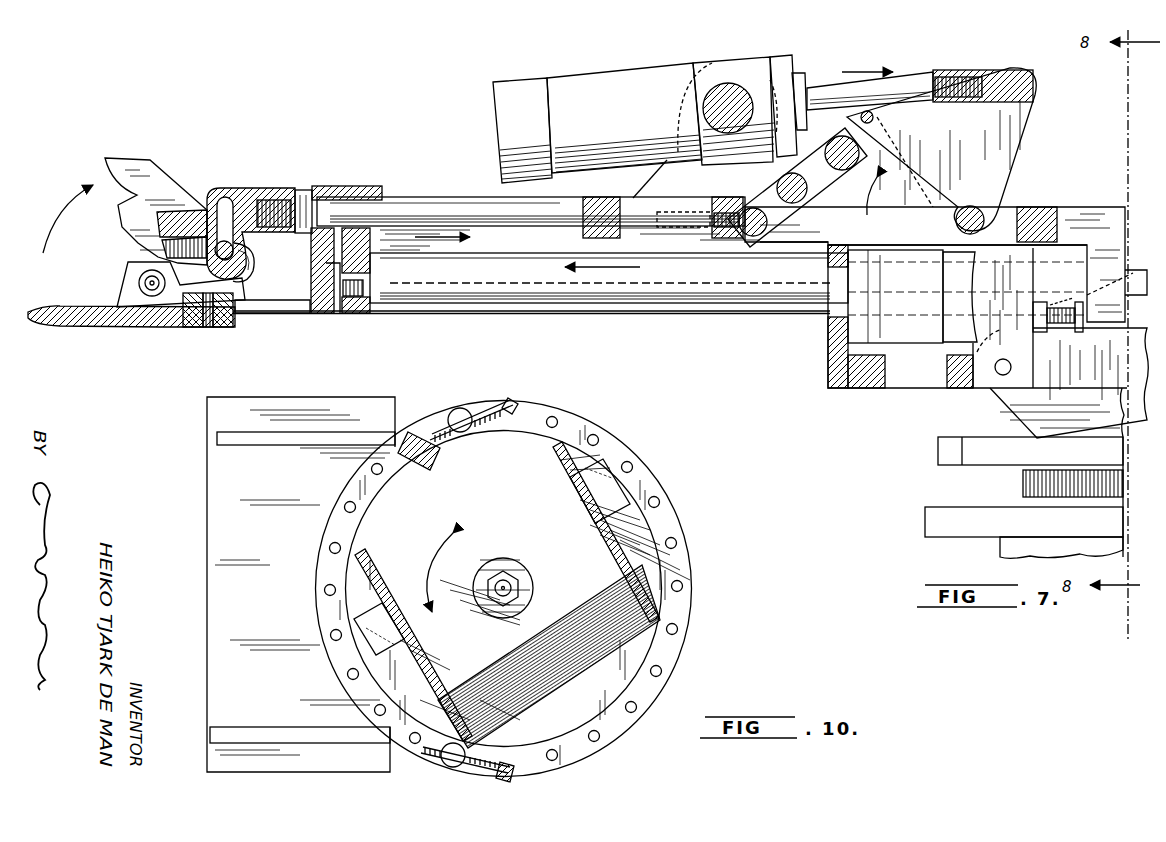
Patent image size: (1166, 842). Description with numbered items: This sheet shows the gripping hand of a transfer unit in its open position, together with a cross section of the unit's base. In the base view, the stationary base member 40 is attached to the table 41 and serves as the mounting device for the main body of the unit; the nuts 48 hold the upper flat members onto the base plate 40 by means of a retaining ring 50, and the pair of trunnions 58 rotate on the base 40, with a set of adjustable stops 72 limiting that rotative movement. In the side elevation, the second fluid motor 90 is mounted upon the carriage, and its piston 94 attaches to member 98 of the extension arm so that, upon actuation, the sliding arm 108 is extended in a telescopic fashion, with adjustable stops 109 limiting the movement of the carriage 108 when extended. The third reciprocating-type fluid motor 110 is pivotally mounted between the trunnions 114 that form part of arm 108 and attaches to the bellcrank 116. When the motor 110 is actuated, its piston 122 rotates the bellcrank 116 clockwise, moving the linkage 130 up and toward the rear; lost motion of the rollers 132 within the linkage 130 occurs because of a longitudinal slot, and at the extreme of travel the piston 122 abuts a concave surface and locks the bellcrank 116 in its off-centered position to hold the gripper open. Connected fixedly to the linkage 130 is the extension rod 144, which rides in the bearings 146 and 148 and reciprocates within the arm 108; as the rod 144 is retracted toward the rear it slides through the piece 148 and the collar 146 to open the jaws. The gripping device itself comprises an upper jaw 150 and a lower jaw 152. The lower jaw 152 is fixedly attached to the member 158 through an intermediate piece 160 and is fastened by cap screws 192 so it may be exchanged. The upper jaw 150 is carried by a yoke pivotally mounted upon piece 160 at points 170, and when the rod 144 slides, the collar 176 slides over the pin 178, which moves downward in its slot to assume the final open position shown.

In FIG. 10, the stationary base member 40 is at (683, 577).
In FIG. 10, the table 41 is at (388, 405).
In FIG. 10, the nuts 48 is at (512, 584).
In FIG. 10, the retaining ring 50 is at (530, 585).
In FIG. 10, the trunnions 58 is at (557, 462).
In FIG. 10, the adjustable stops 72 is at (513, 398).
In FIG. 7, the second fluid motor 90 is at (905, 345).
In FIG. 7, the piston 94 is at (754, 306).
In FIG. 7, the member of the extension arm 98 is at (352, 308).
In FIG. 7, the sliding arm 108 is at (1088, 207).
In FIG. 7, the adjustable stops 109 is at (1076, 332).
In FIG. 7, the third reciprocating-type fluid motor 110 is at (645, 90).
In FIG. 7, the trunnions 114 is at (660, 178).
In FIG. 7, the bellcrank 116 is at (1008, 140).
In FIG. 7, the motor piston 122 is at (918, 74).
In FIG. 7, the linkage 130 is at (826, 172).
In FIG. 7, the rollers 132 is at (836, 148).
In FIG. 7, the extension rod 144 is at (420, 204).
In FIG. 7, the bearing (collar) 146 is at (592, 236).
In FIG. 7, the bearing (piece) 148 is at (358, 192).
In FIG. 7, the upper jaw 150 is at (125, 165).
In FIG. 7, the lower jaw 152 is at (68, 306).
In FIG. 7, the member 158 is at (315, 312).
In FIG. 7, the intermediate piece 160 is at (253, 312).
In FIG. 7, the pivot points 170 is at (152, 296).
In FIG. 7, the collar 176 is at (252, 185).
In FIG. 7, the pin 178 is at (228, 270).
In FIG. 7, the cap screws 192 is at (205, 328).